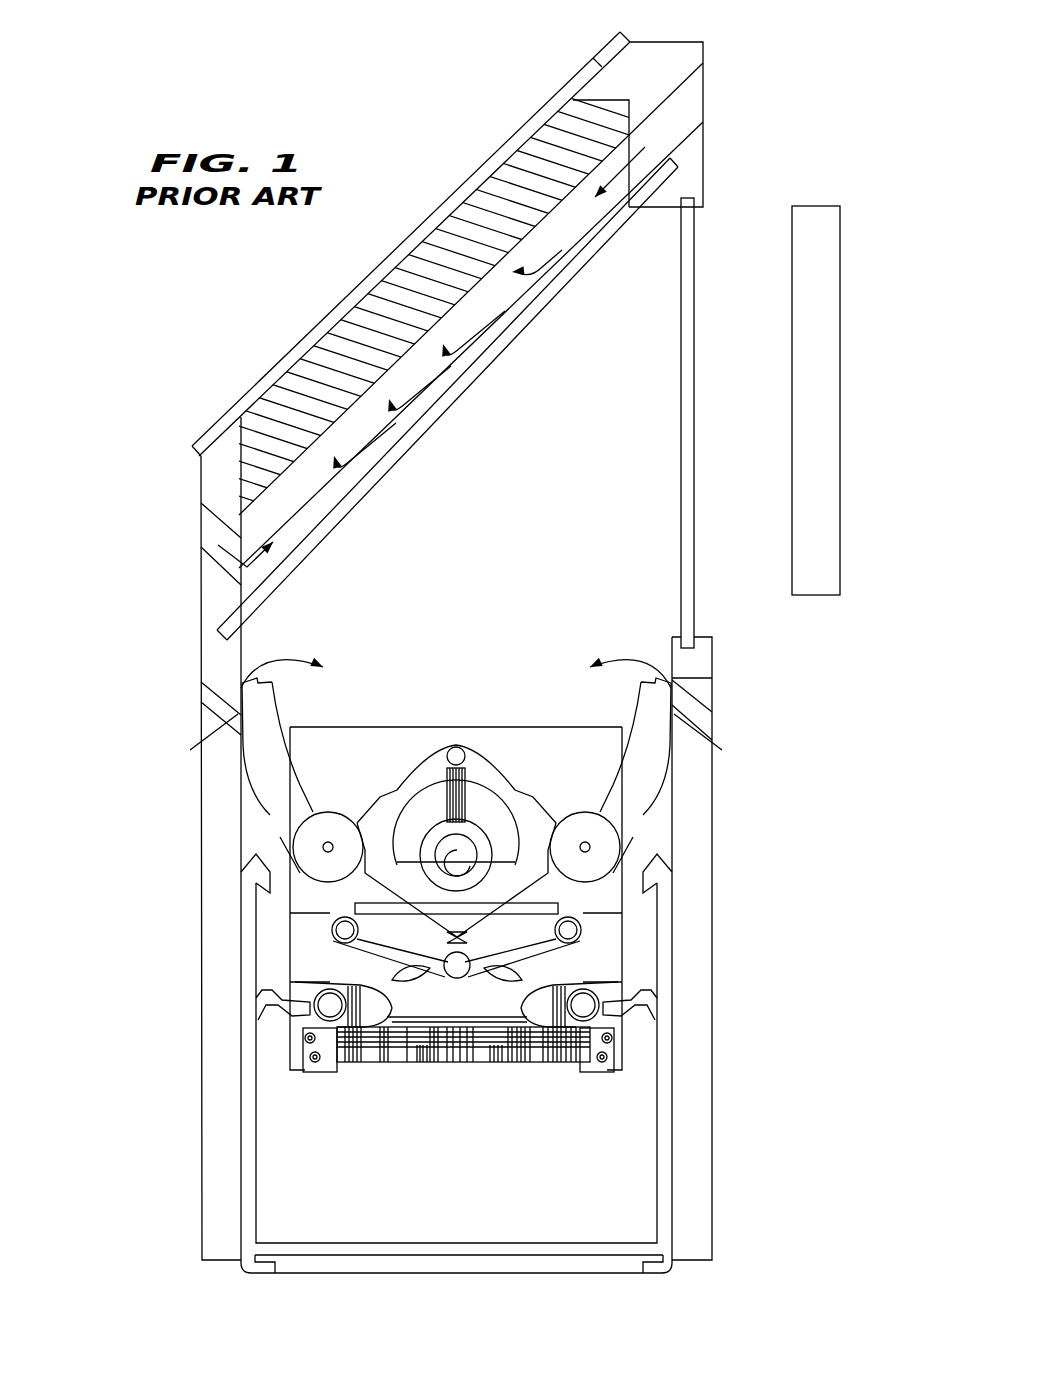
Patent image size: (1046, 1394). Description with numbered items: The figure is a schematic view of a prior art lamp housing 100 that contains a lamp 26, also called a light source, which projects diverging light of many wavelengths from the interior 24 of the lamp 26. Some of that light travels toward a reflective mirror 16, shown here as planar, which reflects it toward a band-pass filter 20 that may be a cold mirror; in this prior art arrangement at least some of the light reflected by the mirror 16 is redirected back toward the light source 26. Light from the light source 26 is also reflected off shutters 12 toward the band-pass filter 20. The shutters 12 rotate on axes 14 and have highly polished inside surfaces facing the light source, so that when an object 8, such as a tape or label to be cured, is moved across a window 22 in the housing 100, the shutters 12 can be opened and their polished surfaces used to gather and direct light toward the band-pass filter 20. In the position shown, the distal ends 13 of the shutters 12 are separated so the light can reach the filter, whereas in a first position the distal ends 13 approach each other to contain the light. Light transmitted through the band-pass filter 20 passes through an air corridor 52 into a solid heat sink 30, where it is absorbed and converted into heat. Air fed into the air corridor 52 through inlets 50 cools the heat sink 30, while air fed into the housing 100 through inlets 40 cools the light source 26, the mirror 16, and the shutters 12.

The object 8 is at (815, 212).
The shutters 12 is at (240, 793).
The distal ends 13 is at (240, 688).
The axes 14 is at (328, 843).
The reflective mirror 16 is at (345, 930).
The band-pass filter 20 is at (622, 216).
The window 22 is at (695, 320).
The interior 24 is at (480, 862).
The lamp 26 is at (428, 873).
The solid heat sink 30 is at (560, 122).
The inlets 40 is at (206, 700).
The inlets 50 is at (695, 112).
The air corridor 52 is at (412, 415).
The lamp housing 100 is at (100, 740).